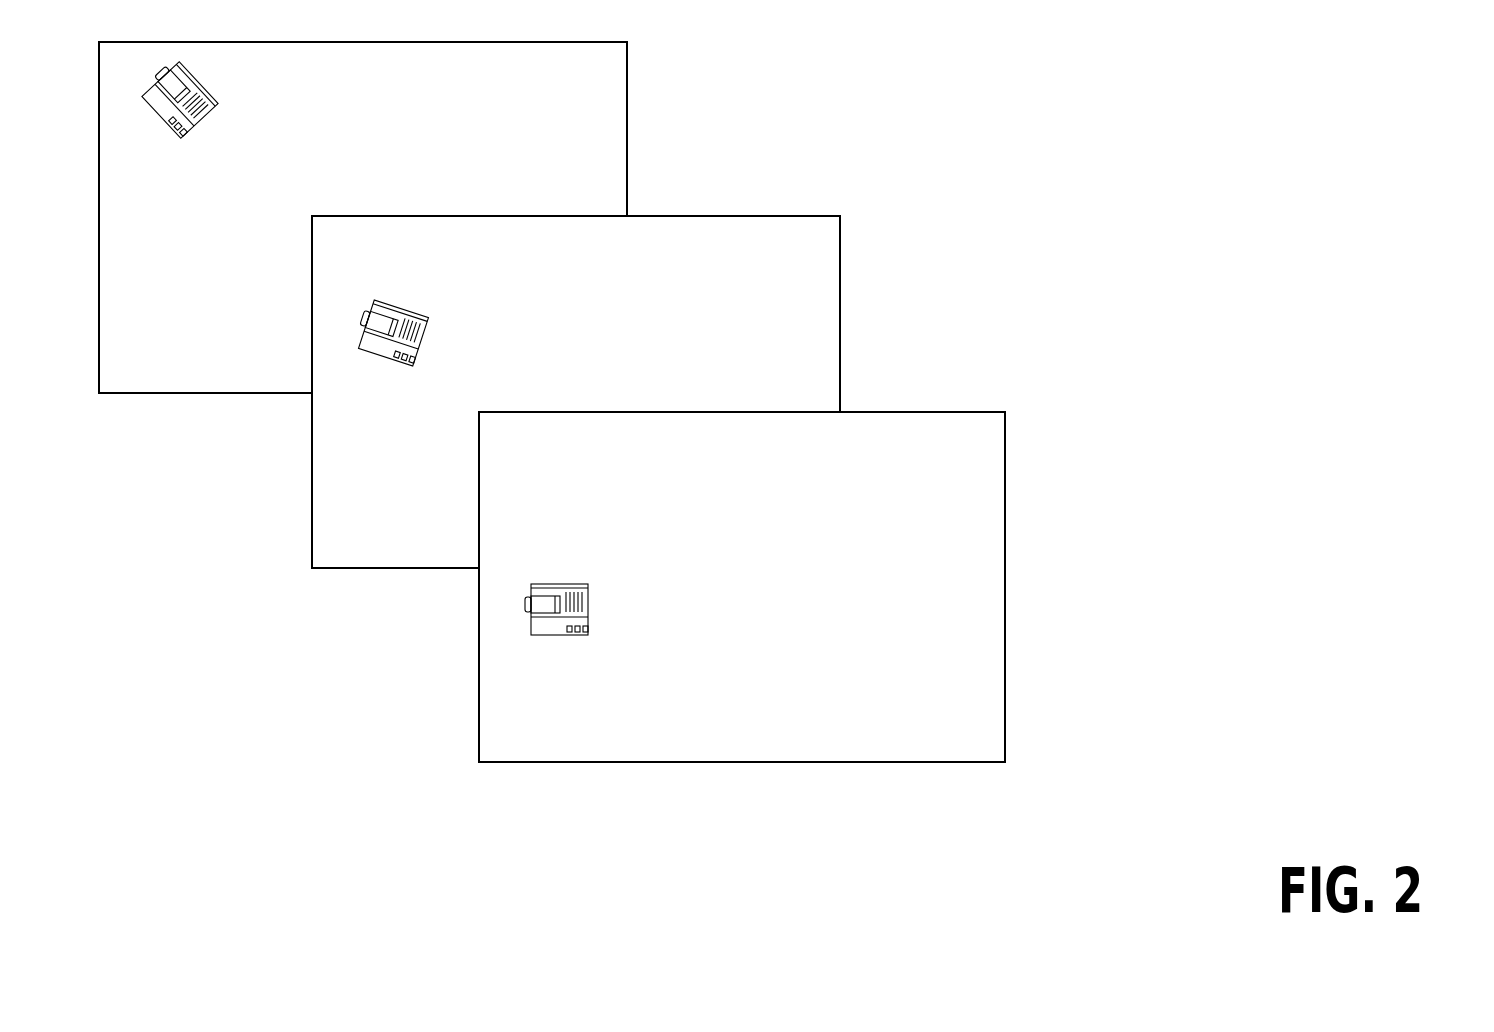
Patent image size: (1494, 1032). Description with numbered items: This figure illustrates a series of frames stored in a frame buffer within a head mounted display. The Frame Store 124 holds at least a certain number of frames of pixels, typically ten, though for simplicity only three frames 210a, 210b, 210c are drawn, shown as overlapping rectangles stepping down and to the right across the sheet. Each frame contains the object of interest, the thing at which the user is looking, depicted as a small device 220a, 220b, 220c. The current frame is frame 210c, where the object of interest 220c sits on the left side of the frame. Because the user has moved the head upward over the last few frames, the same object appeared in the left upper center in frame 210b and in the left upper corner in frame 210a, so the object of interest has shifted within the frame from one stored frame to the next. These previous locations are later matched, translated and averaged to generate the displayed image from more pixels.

The Frame Store 124 is at (1451, 71).
The frame 210a is at (628, 115).
The frame 210b is at (841, 291).
The current frame 210c is at (1006, 485).
The device 220a is at (215, 100).
The device 220b is at (417, 338).
The object of interest 220c is at (583, 613).